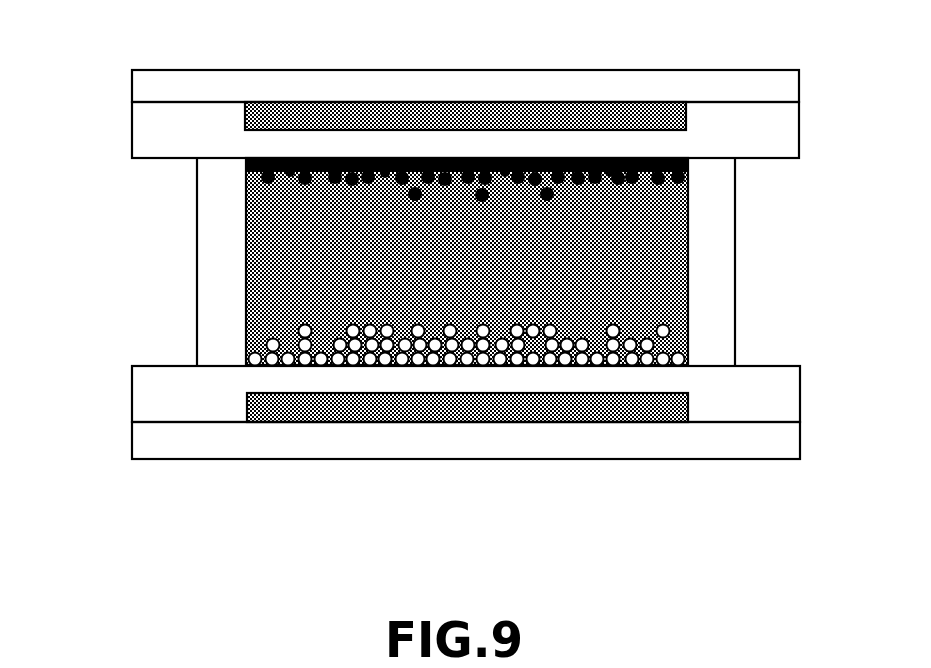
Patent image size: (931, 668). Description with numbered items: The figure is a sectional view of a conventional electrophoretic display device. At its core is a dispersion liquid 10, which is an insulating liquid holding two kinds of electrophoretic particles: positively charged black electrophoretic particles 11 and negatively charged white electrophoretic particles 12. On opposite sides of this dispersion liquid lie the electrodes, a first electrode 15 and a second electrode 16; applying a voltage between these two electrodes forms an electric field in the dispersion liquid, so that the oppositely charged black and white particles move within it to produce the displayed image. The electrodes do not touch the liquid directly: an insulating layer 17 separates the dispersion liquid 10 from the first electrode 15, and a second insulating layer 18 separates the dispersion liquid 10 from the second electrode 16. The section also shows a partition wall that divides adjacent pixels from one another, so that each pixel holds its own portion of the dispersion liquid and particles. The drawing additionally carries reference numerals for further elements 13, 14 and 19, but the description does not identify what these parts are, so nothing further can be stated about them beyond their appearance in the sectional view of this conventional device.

The dispersion liquid 10 is at (247, 258).
The black electrophoretic particles 11 is at (247, 178).
The white electrophoretic particles 12 is at (247, 335).
The upper substrate 13 is at (215, 88).
The lower substrate 14 is at (195, 442).
The first electrode 15 is at (630, 122).
The second electrode 16 is at (650, 408).
The insulating layer 17 is at (767, 143).
The insulating layer 18 is at (767, 388).
The spacer / partition wall 19 is at (708, 272).